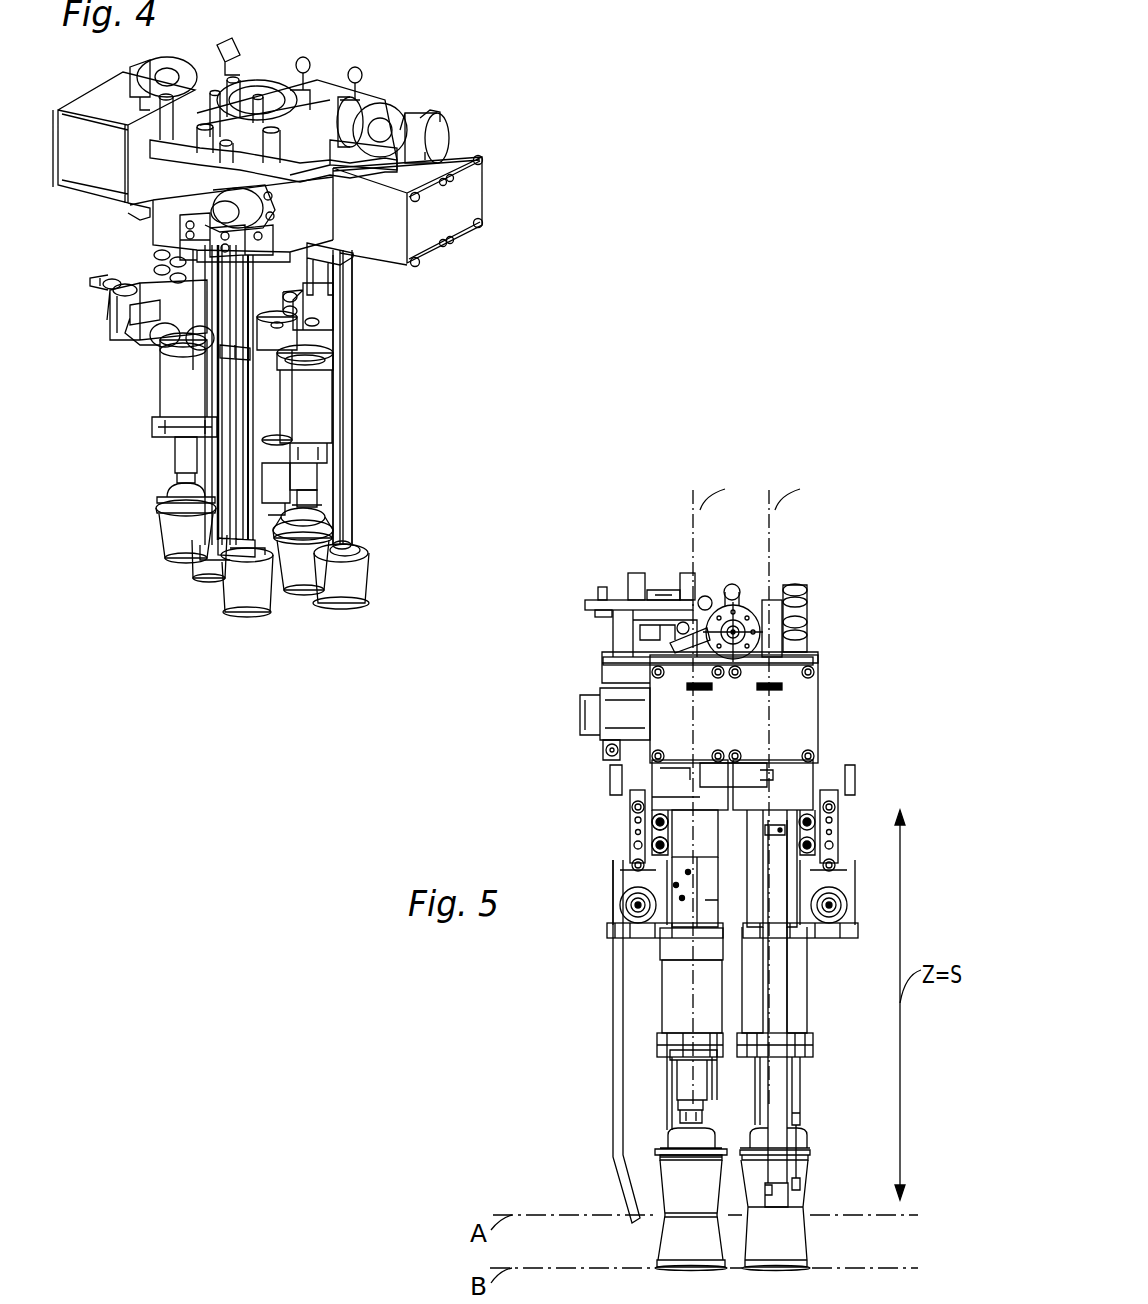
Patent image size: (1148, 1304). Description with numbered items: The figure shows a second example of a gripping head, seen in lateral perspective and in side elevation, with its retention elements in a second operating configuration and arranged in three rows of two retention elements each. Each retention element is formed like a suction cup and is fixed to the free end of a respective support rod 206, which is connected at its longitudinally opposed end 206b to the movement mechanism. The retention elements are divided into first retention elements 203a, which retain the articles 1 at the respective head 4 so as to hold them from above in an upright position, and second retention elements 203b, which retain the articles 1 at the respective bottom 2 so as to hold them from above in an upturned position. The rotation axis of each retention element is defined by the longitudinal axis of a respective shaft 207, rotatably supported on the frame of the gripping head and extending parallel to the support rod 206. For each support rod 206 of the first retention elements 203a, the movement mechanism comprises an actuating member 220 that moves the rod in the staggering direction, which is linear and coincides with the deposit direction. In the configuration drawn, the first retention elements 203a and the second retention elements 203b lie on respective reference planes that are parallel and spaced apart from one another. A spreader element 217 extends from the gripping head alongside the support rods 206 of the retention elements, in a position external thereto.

In FIG. 4, the longitudinally opposed end of the support rod 206b is at (410, 264).
In FIG. 4, the actuating member 220 is at (183, 397).
In FIG. 5, the actuating member 220 is at (673, 992).
In FIG. 4, the support rod 206 is at (185, 460).
In FIG. 5, the support rod 206 is at (682, 1092).
In FIG. 4, the first retention element 203a is at (153, 493).
In FIG. 5, the first retention element 203a is at (670, 1133).
In FIG. 4, the second retention element 203b is at (353, 550).
In FIG. 5, the second retention element 203b is at (787, 1202).
In FIG. 4, the article 1 is at (362, 578).
In FIG. 5, the article 1 is at (672, 1187).
In FIG. 4, the bottom 2 is at (307, 590).
In FIG. 4, the head 4 is at (360, 608).
In FIG. 5, the shaft 207 is at (683, 838).
In FIG. 5, the spreader element 217 is at (620, 1036).